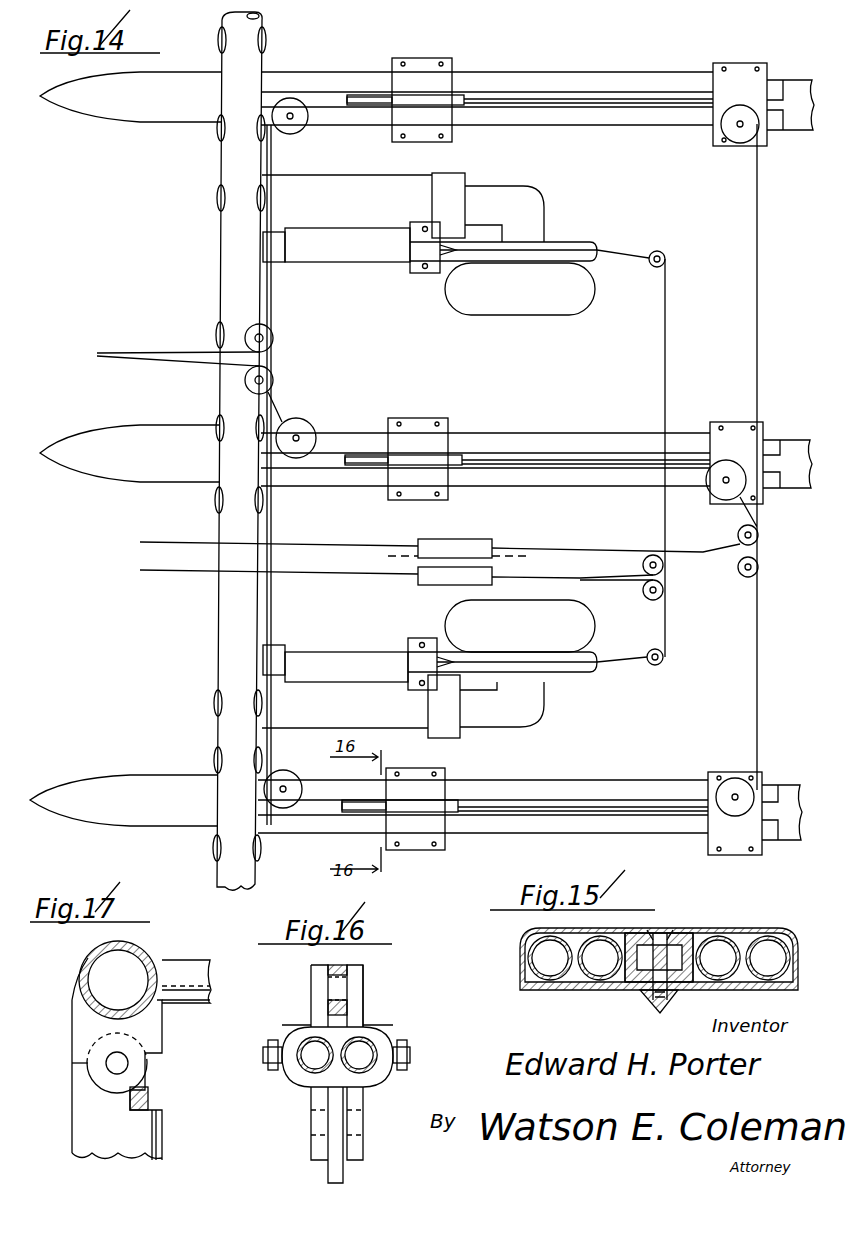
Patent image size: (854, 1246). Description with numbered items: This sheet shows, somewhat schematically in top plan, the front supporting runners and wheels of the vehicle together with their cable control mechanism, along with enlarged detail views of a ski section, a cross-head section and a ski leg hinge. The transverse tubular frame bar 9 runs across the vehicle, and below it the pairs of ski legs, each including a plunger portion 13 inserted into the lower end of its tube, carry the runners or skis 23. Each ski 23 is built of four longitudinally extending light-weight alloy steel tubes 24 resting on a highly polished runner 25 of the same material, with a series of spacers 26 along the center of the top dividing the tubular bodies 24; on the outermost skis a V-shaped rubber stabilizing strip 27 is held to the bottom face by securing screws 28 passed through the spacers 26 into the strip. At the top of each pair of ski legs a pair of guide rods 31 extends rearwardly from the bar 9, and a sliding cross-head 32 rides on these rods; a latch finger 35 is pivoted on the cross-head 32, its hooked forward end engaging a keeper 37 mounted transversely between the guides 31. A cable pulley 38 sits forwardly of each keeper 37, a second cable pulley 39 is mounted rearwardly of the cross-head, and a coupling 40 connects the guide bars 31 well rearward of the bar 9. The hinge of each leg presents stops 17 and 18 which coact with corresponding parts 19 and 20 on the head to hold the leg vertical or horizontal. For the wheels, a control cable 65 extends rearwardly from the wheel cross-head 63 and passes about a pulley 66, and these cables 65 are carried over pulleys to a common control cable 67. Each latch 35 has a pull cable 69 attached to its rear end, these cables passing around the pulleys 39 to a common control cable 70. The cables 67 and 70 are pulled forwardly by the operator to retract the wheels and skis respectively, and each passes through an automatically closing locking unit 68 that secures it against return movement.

In FIG. 14, the frame bar 9 is at (221, 292).
In FIG. 17, the frame bar 9 is at (80, 968).
In FIG. 14, the plunger portion 13 is at (458, 559).
In FIG. 17, the stop 17 is at (72, 1088).
In FIG. 17, the stop 18 is at (156, 1102).
In FIG. 17, the coacting part 19 is at (72, 1062).
In FIG. 17, the coacting part 20 is at (148, 1058).
In FIG. 14, the runner or ski 23 is at (177, 102).
In FIG. 15, the light-weight alloy steel tubes 24 is at (530, 960).
In FIG. 15, the runner 25 is at (588, 990).
In FIG. 15, the spacer 26 is at (710, 990).
In FIG. 15, the V-shaped rubber or stabilizing strip 27 is at (658, 1000).
In FIG. 15, the securing screw 28 is at (665, 930).
In FIG. 14, the guide rod 31 is at (575, 110).
In FIG. 17, the guide rod 31 is at (187, 966).
In FIG. 16, the guide rod 31 is at (303, 1035).
In FIG. 14, the sliding cross-head 32 is at (420, 80).
In FIG. 16, the sliding cross-head 32 is at (380, 1032).
In FIG. 14, the latch finger 35 is at (378, 108).
In FIG. 16, the latch finger 35 is at (328, 968).
In FIG. 14, the keeper 37 is at (358, 95).
In FIG. 14, the cable pulley 38 is at (296, 134).
In FIG. 14, the second cable pulley 39 is at (730, 146).
In FIG. 14, the coupling 40 is at (736, 76).
In FIG. 14, the cross-head 63 is at (417, 270).
In FIG. 14, the control cable 65 is at (665, 336).
In FIG. 14, the pulley 66 is at (666, 254).
In FIG. 14, the common control cable 67 is at (186, 576).
In FIG. 14, the locking unit 68 is at (465, 550).
In FIG. 14, the pull cable 69 is at (625, 118).
In FIG. 14, the common control cable 70 is at (588, 550).